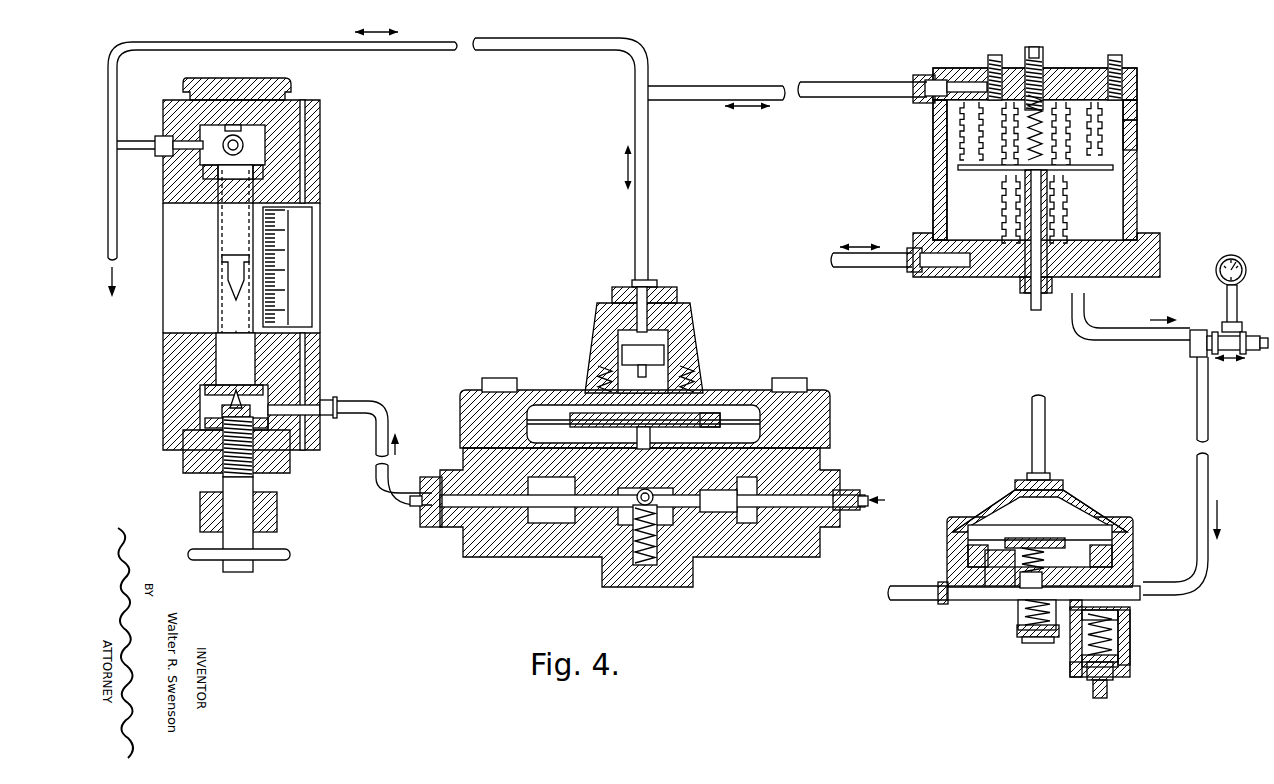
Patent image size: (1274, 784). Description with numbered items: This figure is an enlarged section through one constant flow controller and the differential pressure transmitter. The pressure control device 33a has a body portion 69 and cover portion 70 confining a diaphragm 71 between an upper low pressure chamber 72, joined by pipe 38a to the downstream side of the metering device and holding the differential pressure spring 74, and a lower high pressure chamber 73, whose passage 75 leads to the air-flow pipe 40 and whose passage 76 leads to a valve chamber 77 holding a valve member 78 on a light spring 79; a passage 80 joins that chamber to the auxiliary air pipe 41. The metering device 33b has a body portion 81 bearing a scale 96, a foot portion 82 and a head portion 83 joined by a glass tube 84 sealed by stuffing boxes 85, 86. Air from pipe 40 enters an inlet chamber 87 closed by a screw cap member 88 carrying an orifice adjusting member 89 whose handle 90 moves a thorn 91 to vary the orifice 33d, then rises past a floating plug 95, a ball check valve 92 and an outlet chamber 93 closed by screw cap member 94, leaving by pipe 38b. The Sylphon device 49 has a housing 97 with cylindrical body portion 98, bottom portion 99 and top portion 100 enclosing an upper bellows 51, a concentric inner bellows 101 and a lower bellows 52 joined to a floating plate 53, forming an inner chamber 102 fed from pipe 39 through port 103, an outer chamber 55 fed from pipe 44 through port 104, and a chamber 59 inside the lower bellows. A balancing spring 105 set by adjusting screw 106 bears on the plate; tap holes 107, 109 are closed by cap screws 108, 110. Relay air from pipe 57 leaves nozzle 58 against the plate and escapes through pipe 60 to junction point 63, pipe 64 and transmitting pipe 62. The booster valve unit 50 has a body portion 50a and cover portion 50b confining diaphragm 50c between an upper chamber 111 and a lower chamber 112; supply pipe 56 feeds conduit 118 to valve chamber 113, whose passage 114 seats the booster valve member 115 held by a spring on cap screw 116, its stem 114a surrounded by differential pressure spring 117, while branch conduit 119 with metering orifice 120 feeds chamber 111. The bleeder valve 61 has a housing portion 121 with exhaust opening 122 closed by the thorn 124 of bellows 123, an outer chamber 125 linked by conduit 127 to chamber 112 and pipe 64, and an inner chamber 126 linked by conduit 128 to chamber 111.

The pressure control device 33a is at (583, 326).
The metering device 33b is at (322, 128).
The orifice 33d is at (225, 410).
The sub-branch pipe 38a is at (545, 50).
The sub-branch pipe 38b is at (142, 153).
The branch pipe 39 is at (842, 98).
The air-flow pipe 40 is at (370, 478).
The pipe 41 is at (862, 492).
The pipe 44 is at (870, 267).
The Sylphon device 49 is at (1143, 70).
The booster valve unit 50 is at (940, 532).
The body portion 50a is at (953, 607).
The top or cover portion 50b is at (1083, 508).
The pressure responsive diaphragm 50c is at (983, 528).
The upper large diameter bellows 51 is at (1100, 137).
The lower smaller diameter bellows 52 is at (1067, 230).
The floating plate 53 is at (1100, 170).
The outer annular pressure chamber 55 is at (960, 180).
The air supply pipe 56 is at (892, 590).
The air passage pipe 57 is at (1047, 413).
The air nozzle 58 is at (1047, 193).
The pressure chamber 59 is at (1020, 222).
The air passage pipe 60 is at (1140, 348).
The automatic bleeder valve 61 is at (1127, 628).
The pressure transmitting pipe 62 is at (1262, 345).
The junction point 63 is at (1200, 337).
The pipe 64 is at (1209, 423).
The body portion 69 is at (783, 547).
The top or cover portion 70 is at (572, 393).
The diaphragm 71 is at (733, 415).
The upper pressure chamber 72 is at (550, 413).
The lower pressure chamber 73 is at (540, 432).
The differential pressure spring 74 is at (717, 383).
The passage 75 is at (545, 510).
The passage 76 is at (642, 487).
The valve chamber 77 is at (690, 497).
The valve member 78 is at (642, 503).
The light spring 79 is at (648, 565).
The passage 80 is at (717, 500).
The body portion 81 is at (321, 240).
The foot portion 82 is at (323, 435).
The head portion 83 is at (322, 185).
The vertical glass tube 84 is at (217, 230).
The stuffing box 85 is at (208, 182).
The stuffing box 86 is at (210, 385).
The inlet chamber 87 is at (262, 420).
The screw cap member 88 is at (200, 472).
The orifice adjusting member 89 is at (240, 572).
The handle 90 is at (208, 553).
The thorn 91 is at (222, 416).
The ball check valve 92 is at (237, 135).
The outlet chamber 93 is at (198, 135).
The screw cap member 94 is at (235, 80).
The floating plug 95 is at (228, 275).
The scale 96 is at (300, 277).
The housing 97 is at (1138, 87).
The cylindrical body portion 98 is at (940, 187).
The bottom portion 99 is at (1113, 275).
The top portion 100 is at (1082, 70).
The inner bellows 101 is at (1065, 147).
The annular inner pressure chamber 102 is at (993, 143).
The port 103 is at (952, 83).
The port 104 is at (957, 257).
The compression coil spring 105 is at (1045, 117).
The adjusting screw 106 is at (1033, 50).
The tap hole 107 is at (980, 87).
The cap screw 108 is at (993, 57).
The tap hole 109 is at (1138, 112).
The cap screw 110 is at (1113, 57).
The upper pressure chamber 111 is at (1065, 513).
The lower pressure chamber 112 is at (1083, 545).
The valve chamber 113 is at (1037, 623).
The passage 114 is at (1032, 590).
The valve stem 114a is at (1028, 543).
The booster valve member 115 is at (1028, 580).
The cap screw 116 is at (1042, 632).
The compression coil spring 117 is at (1010, 537).
The conduit 118 is at (983, 593).
The branch conduit 119 is at (975, 567).
The metering orifice 120 is at (975, 550).
The housing portion 121 is at (1127, 660).
The exhaust opening 122 is at (1097, 700).
The bellows 123 is at (1113, 648).
The thorn 124 is at (1117, 680).
The outer pressure chamber 125 is at (1080, 673).
The inner pressure chamber 126 is at (1113, 613).
The conduit 127 is at (1082, 592).
The conduit 128 is at (1107, 555).